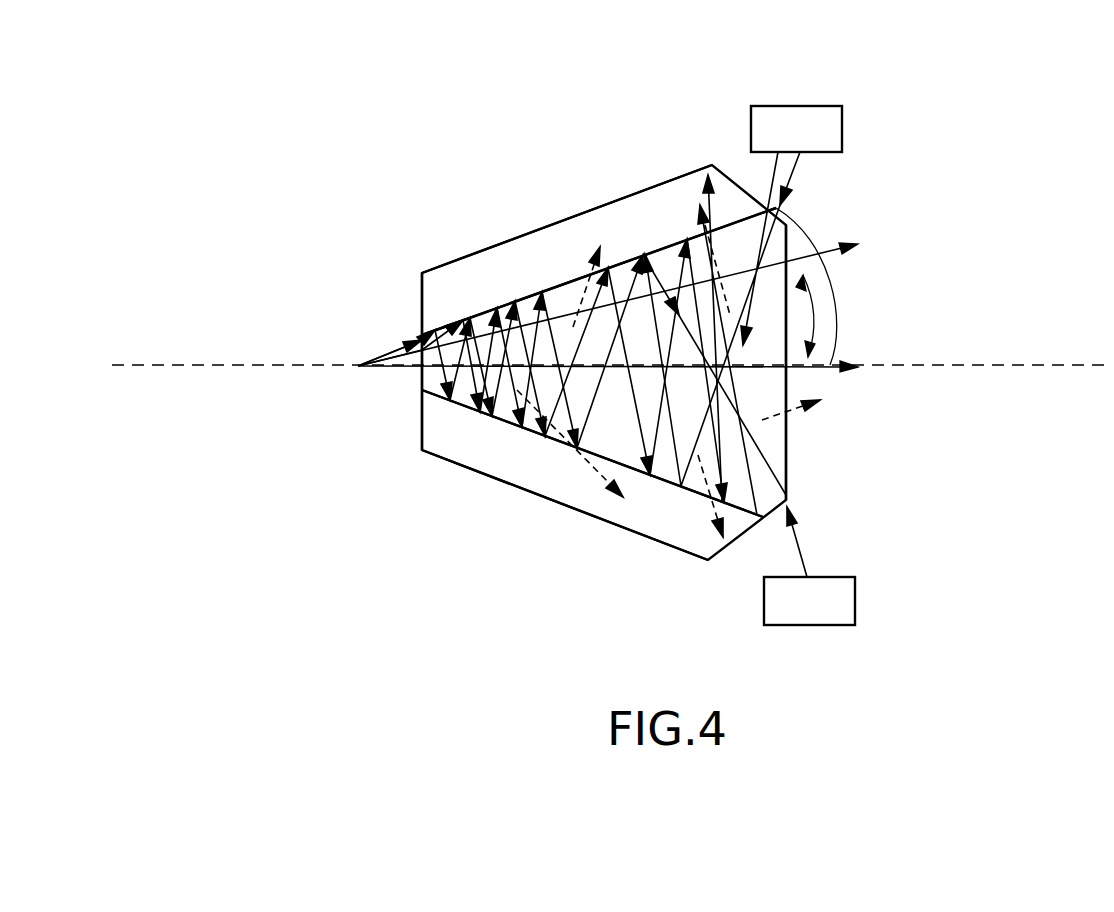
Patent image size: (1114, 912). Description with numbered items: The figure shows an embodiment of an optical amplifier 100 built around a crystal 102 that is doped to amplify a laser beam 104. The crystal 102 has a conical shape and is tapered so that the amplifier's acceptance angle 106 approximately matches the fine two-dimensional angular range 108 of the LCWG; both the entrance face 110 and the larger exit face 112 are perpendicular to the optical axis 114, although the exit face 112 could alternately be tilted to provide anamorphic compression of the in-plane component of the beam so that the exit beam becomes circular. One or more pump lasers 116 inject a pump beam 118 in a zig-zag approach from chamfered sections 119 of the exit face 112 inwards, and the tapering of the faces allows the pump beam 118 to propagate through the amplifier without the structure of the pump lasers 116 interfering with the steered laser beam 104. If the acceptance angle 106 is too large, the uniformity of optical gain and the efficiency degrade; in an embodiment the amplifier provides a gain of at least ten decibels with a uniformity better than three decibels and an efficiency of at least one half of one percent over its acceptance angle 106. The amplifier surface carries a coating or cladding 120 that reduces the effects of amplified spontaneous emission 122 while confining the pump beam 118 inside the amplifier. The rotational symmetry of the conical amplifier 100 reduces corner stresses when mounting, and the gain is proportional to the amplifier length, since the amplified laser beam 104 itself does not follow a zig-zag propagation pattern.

The optical amplifier 100 is at (322, 198).
The crystal 102 is at (786, 435).
The laser beam 104 is at (362, 366).
The acceptance angle 106 is at (608, 304).
The fine two-dimensional angular range 108 is at (806, 286).
The entrance face 110 is at (405, 340).
The exit face 112 is at (786, 462).
The optical axis 114 is at (1012, 365).
The pump laser 116 is at (800, 106).
The pump beam 118 is at (790, 184).
The chamfered section 119 is at (778, 508).
The coating 120 is at (527, 236).
The amplified spontaneous emission 122 is at (552, 478).